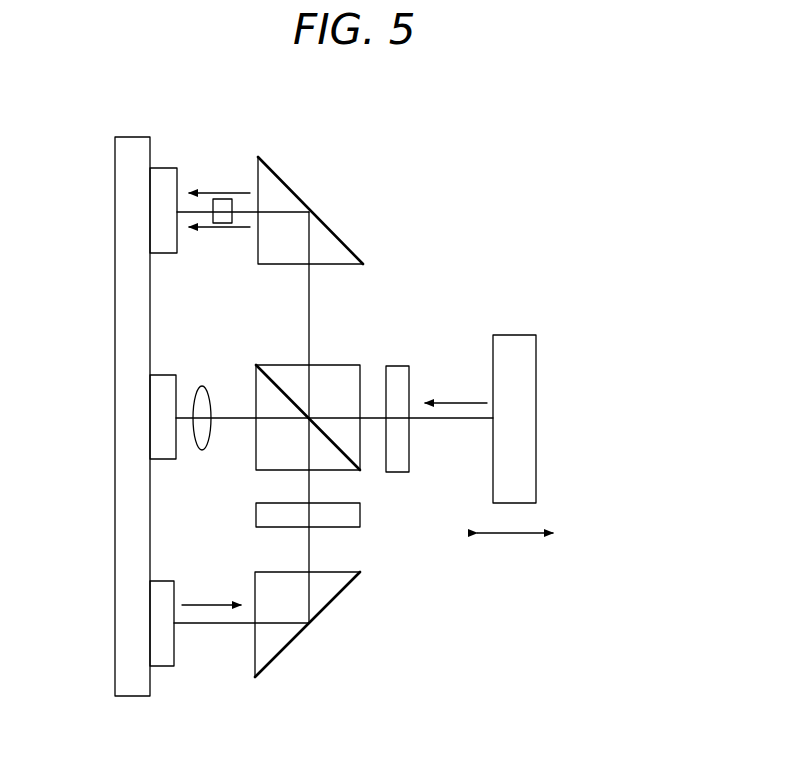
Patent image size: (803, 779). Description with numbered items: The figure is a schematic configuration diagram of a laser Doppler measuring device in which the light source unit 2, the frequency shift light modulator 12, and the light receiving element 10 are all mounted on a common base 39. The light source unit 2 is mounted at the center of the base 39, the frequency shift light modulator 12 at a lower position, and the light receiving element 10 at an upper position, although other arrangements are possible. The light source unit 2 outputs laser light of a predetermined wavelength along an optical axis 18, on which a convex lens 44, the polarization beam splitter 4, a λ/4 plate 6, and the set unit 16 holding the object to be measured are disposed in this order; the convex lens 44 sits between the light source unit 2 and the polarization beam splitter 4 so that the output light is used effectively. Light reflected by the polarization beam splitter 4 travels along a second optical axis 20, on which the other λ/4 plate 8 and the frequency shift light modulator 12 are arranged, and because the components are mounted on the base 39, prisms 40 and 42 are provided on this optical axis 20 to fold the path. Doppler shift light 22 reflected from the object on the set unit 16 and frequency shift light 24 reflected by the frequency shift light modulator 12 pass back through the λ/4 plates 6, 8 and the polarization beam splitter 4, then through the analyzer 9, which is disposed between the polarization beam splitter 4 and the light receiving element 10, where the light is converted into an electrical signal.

The base 39 is at (123, 157).
The light receiving element 10 is at (163, 172).
The light source unit 2 is at (164, 375).
The frequency shift light modulator 12 is at (162, 668).
The analyzer 9 is at (228, 199).
The Doppler shift light 22 is at (218, 199).
The frequency shift light 24 is at (222, 223).
The prism 40 is at (280, 178).
The optical axis 18 is at (455, 422).
The convex lens 44 is at (208, 437).
The polarization beam splitter 4 is at (328, 365).
The λ/4 plate 8 is at (360, 515).
The λ/4 plate 6 is at (390, 472).
The set unit 16 is at (525, 402).
The optical axis 20 is at (210, 625).
The prism 42 is at (278, 660).